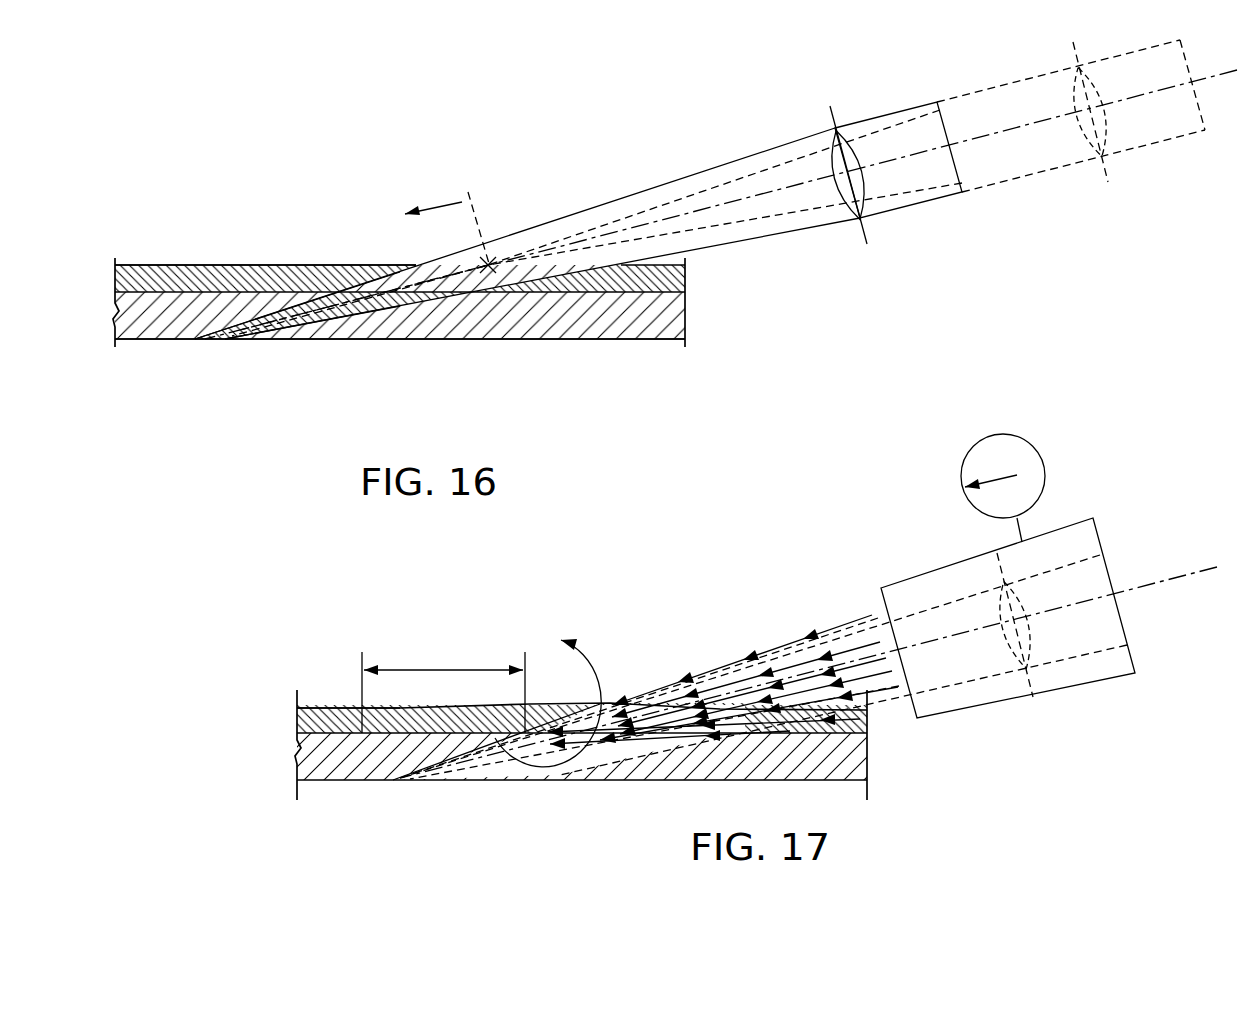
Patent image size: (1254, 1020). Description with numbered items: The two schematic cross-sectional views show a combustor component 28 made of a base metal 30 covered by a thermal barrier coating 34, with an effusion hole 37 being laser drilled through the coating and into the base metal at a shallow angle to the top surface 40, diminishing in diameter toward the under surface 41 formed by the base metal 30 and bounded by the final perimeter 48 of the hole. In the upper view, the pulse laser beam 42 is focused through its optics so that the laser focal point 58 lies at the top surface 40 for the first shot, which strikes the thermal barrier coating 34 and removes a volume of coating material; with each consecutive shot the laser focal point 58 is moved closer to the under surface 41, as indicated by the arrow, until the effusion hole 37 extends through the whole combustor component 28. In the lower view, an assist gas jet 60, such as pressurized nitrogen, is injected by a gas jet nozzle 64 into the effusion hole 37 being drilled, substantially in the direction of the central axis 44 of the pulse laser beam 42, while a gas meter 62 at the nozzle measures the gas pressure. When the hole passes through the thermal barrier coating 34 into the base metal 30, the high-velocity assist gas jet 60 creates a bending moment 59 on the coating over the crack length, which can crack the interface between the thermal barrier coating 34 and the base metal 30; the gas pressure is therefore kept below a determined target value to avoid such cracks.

In FIG. 16, the combustor component 28 is at (486, 297).
In FIG. 16, the base metal 30 is at (686, 318).
In FIG. 17, the base metal 30 is at (868, 766).
In FIG. 16, the thermal barrier coating 34 is at (686, 290).
In FIG. 17, the thermal barrier coating 34 is at (868, 728).
In FIG. 16, the effusion hole 37 is at (224, 340).
In FIG. 17, the effusion hole 37 is at (418, 780).
In FIG. 16, the top surface 40 is at (240, 265).
In FIG. 17, the top surface 40 is at (320, 708).
In FIG. 16, the under surface 41 is at (503, 340).
In FIG. 16, the pulse laser beam 42 is at (713, 170).
In FIG. 17, the pulse laser beam 42 is at (848, 632).
In FIG. 16, the central axis of the pulse laser beam 44 is at (897, 158).
In FIG. 17, the central axis of the pulse laser beam 44 is at (1173, 578).
In FIG. 16, the final perimeter of the hole 48 is at (300, 302).
In FIG. 17, the final perimeter of the hole 48 is at (580, 768).
In FIG. 16, the laser focal point 58 is at (488, 266).
In FIG. 17, the bending moment 59 is at (598, 667).
In FIG. 17, the assist gas jet 60 is at (770, 647).
In FIG. 17, the gas meter 62 is at (1040, 452).
In FIG. 17, the gas jet nozzle 64 is at (913, 572).